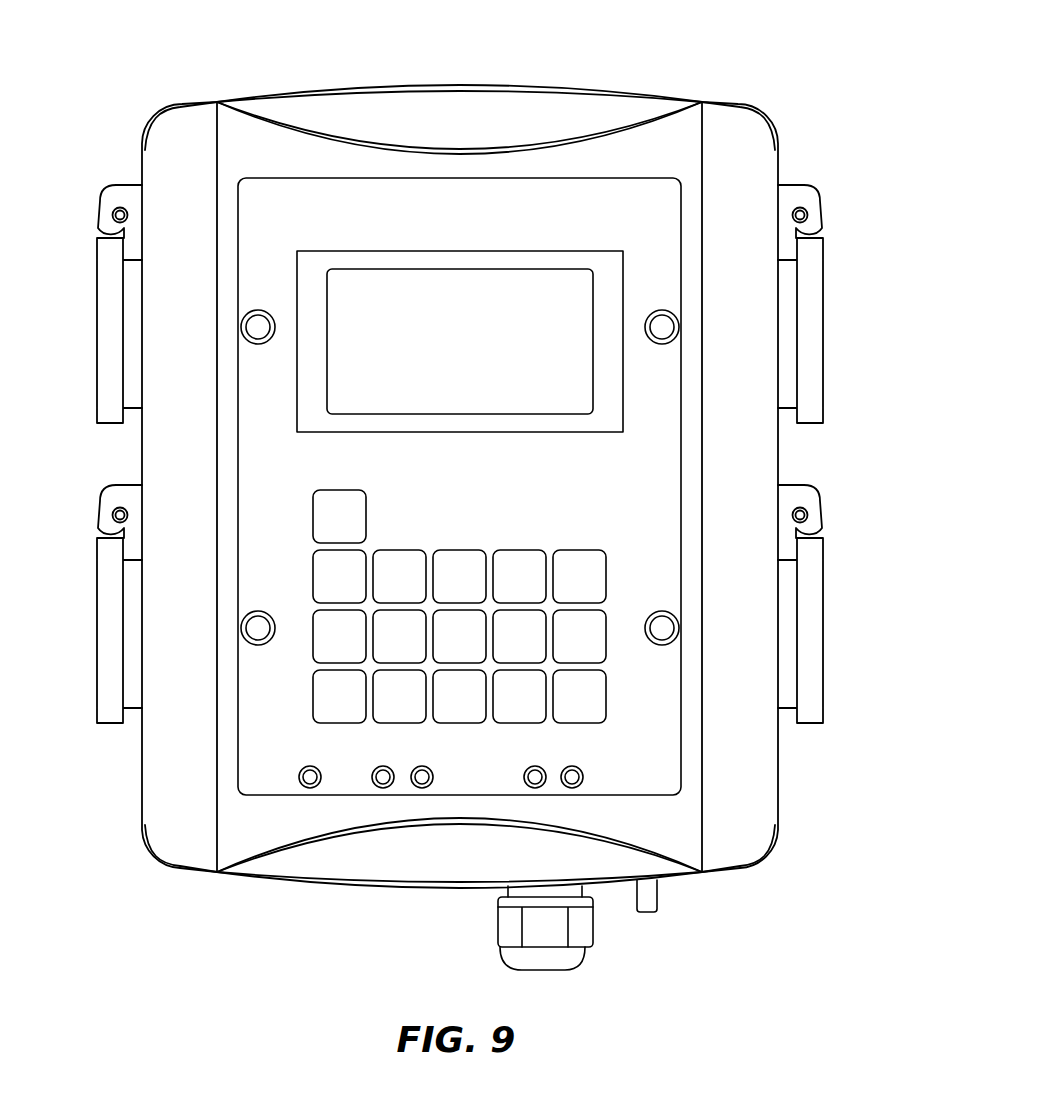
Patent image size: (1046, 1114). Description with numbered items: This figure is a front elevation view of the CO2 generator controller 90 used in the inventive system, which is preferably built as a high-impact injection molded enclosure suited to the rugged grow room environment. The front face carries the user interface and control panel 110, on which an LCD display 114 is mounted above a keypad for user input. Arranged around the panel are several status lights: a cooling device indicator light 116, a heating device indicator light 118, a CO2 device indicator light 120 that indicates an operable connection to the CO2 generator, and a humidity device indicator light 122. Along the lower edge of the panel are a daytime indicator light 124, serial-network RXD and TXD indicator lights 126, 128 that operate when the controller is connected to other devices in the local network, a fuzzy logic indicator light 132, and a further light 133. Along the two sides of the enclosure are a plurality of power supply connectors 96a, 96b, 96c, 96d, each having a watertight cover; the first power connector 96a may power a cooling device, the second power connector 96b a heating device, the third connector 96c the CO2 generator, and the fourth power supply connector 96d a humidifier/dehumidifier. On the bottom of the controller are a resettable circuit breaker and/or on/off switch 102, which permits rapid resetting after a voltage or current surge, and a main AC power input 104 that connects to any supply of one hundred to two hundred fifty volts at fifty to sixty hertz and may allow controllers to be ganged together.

The CO2 generator controller 90 is at (711, 57).
The user interface and control panel 110 is at (189, 473).
The LCD display 114 is at (495, 287).
The cooling device indicator light 116 is at (256, 326).
The heating device indicator light 118 is at (257, 628).
The CO2 device indicator light 120 is at (664, 325).
The humidity device indicator light 122 is at (664, 628).
The daytime indicator light 124 is at (299, 777).
The TIA/EIA-485 RXD indicator light 126 is at (373, 779).
The TIA/EIA-485 TXD indicator light 128 is at (413, 779).
The fuzzy logic indicator light 132 is at (580, 780).
The indicator light 133 is at (546, 781).
The first power connector 96a is at (96, 237).
The second power connector 96b is at (117, 723).
The third connector 96c is at (806, 423).
The fourth power supply connector 96d is at (806, 723).
The resettable circuit breaker and/or on/off switch 102 is at (658, 896).
The main AC power input 104 is at (519, 953).